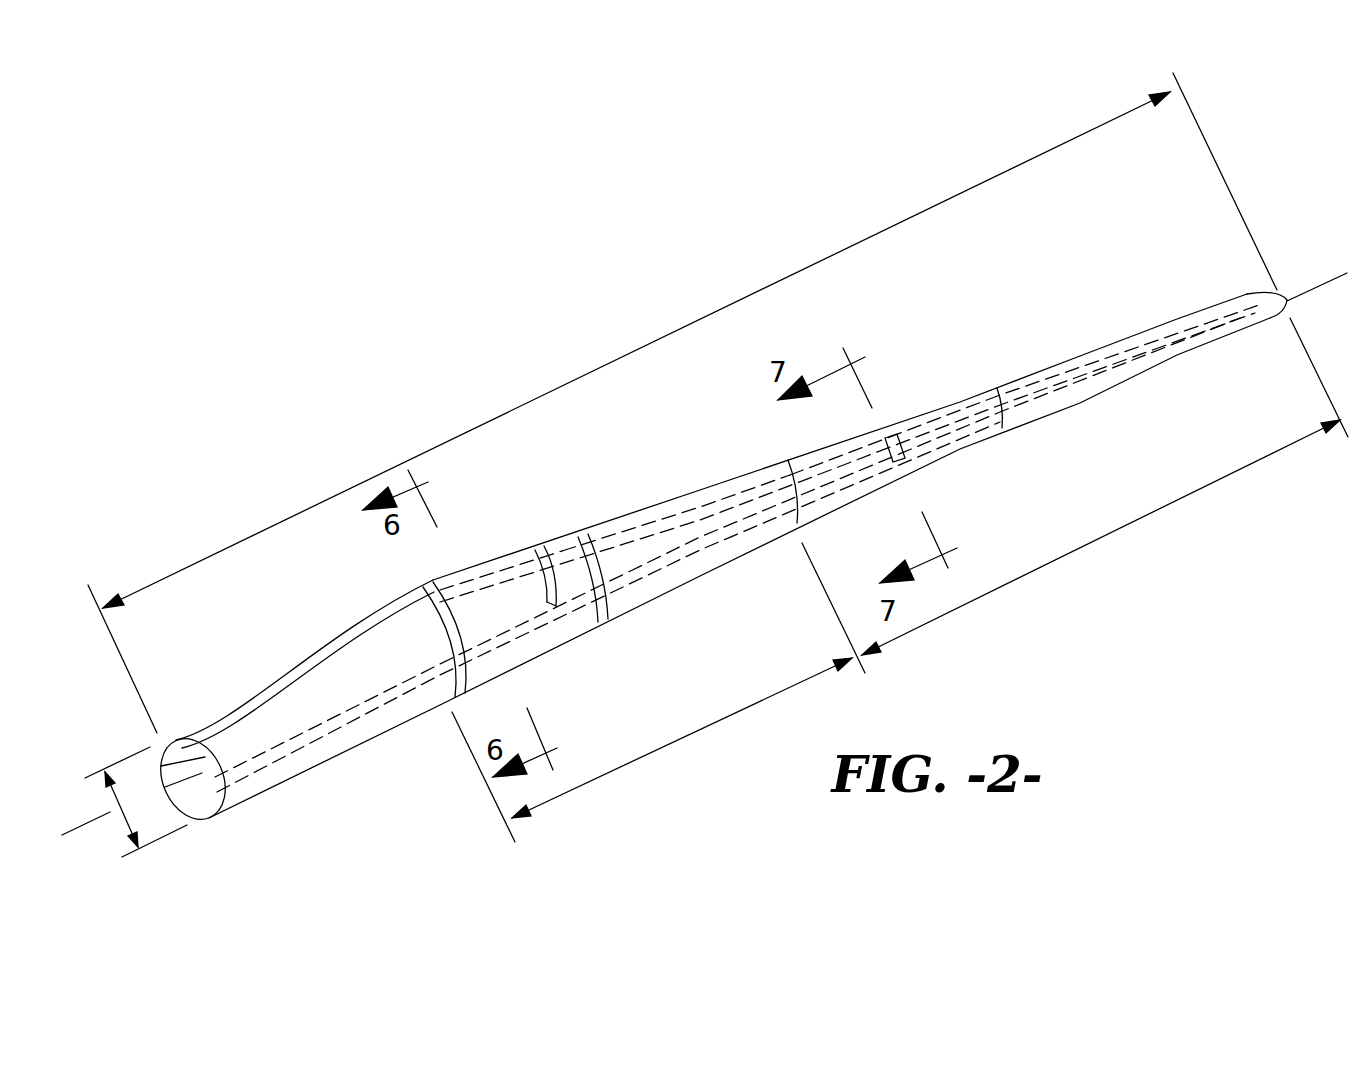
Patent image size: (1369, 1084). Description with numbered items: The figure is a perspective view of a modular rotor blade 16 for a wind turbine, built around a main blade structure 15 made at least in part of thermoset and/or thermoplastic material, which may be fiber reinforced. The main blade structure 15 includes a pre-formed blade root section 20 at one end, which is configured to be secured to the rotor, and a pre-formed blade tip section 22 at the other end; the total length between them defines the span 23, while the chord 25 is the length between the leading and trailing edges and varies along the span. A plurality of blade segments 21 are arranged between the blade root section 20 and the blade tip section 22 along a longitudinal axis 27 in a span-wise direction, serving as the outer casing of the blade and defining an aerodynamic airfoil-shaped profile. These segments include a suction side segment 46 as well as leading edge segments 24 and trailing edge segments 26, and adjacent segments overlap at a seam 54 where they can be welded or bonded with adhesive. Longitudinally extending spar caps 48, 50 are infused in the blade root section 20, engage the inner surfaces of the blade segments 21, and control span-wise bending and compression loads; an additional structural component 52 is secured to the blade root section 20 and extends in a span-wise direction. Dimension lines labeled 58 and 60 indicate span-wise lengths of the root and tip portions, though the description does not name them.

The main blade structure 15 is at (327, 722).
The rotor blade 16 is at (704, 578).
The blade root section 20 is at (199, 727).
The blade segment 21 is at (447, 580).
The blade tip section 22 is at (1150, 372).
The span 23 is at (654, 336).
The leading edge segment 24 is at (683, 585).
The chord 25 is at (120, 815).
The trailing edge segment 26 is at (687, 503).
The longitudinal axis 27 is at (148, 797).
The suction side segment 46 is at (950, 412).
The spar cap 48 is at (162, 775).
The spar cap 50 is at (268, 758).
The additional structural component 52 is at (640, 530).
The seam 54 is at (535, 550).
The root segment length 58 is at (651, 752).
The tip segment length 60 is at (1067, 556).